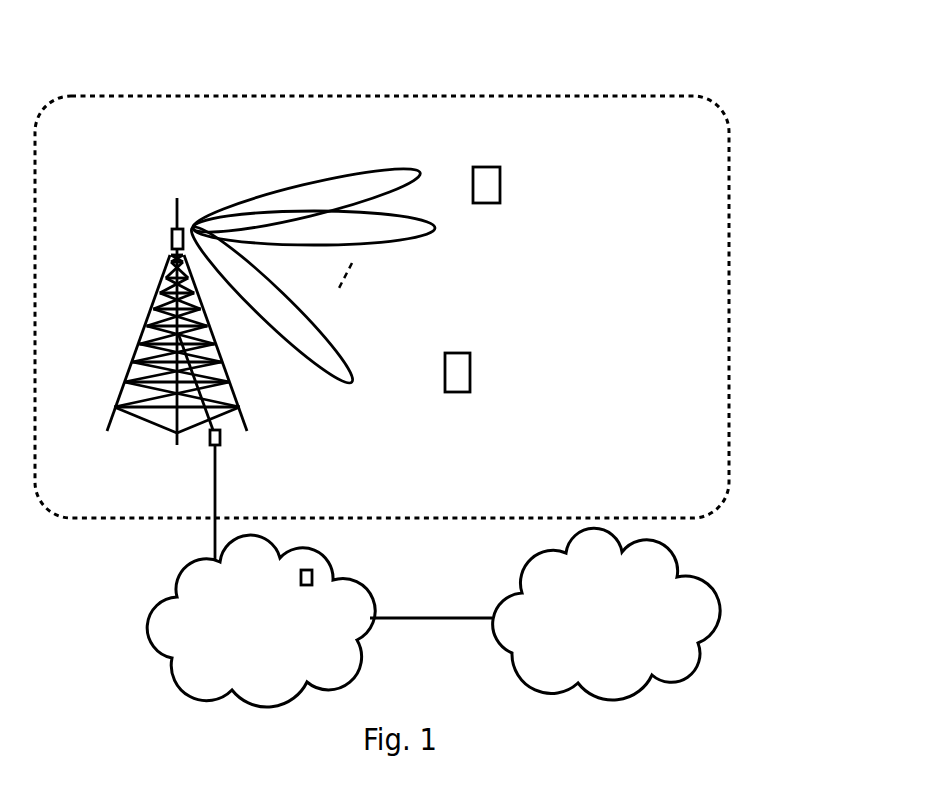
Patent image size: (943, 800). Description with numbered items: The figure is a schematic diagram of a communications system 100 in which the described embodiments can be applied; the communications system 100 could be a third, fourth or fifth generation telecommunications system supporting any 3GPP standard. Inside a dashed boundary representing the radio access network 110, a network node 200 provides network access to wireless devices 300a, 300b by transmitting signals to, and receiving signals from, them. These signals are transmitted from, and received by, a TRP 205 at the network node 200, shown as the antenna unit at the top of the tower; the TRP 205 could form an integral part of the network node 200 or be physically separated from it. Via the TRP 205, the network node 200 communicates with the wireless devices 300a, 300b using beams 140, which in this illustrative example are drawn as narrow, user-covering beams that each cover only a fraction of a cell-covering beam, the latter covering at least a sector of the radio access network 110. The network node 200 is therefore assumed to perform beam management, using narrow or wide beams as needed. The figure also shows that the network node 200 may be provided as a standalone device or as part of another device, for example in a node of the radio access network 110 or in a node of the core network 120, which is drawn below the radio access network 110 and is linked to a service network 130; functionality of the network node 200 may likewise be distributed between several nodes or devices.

The communications system 100 is at (684, 66).
The radio access network 110 is at (105, 142).
The core network 120 is at (270, 599).
The service network 130 is at (620, 584).
The beam 140 is at (300, 186).
The network node 200 is at (210, 435).
The TRP 205 is at (172, 232).
The wireless device 300a is at (481, 203).
The wireless device 300b is at (453, 392).